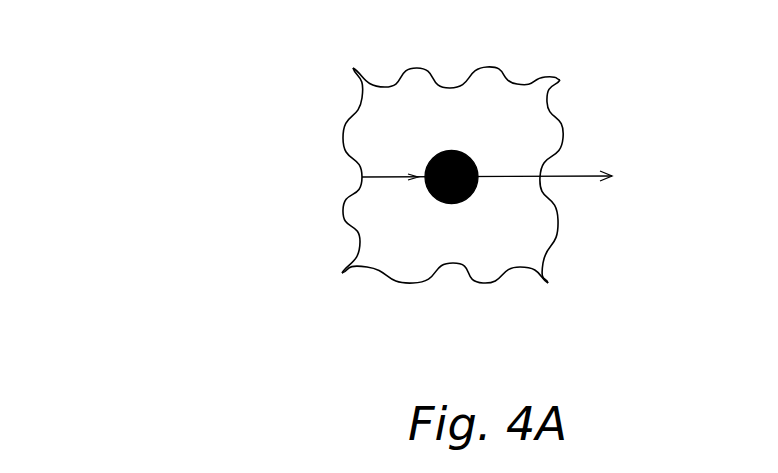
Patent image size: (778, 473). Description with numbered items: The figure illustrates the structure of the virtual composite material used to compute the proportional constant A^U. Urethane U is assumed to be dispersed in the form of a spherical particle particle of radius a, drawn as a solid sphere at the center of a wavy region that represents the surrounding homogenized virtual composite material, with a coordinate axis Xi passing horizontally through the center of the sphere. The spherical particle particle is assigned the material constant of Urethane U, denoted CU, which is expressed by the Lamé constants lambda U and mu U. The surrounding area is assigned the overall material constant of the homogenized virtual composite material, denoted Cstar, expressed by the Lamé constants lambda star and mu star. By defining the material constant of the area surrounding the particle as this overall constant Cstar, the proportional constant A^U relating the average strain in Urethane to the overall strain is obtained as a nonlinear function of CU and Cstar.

The spherical particle is at (362, 178).
The coordinate axis Xi is at (505, 183).
The material constant of Urethane U CU is at (452, 150).
The overall material constant of the homogenized virtual composite material Cstar is at (624, 274).